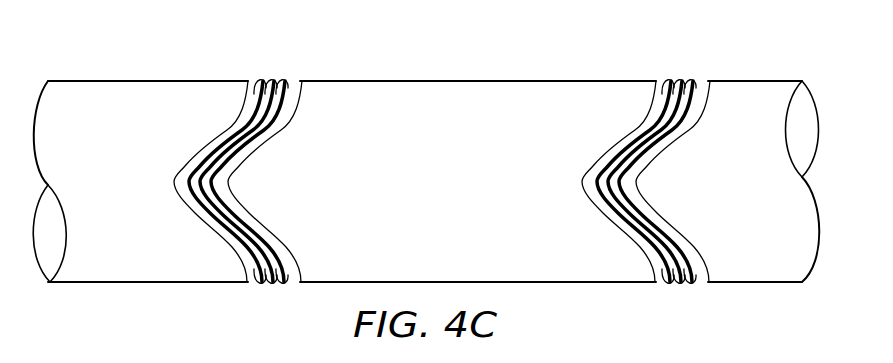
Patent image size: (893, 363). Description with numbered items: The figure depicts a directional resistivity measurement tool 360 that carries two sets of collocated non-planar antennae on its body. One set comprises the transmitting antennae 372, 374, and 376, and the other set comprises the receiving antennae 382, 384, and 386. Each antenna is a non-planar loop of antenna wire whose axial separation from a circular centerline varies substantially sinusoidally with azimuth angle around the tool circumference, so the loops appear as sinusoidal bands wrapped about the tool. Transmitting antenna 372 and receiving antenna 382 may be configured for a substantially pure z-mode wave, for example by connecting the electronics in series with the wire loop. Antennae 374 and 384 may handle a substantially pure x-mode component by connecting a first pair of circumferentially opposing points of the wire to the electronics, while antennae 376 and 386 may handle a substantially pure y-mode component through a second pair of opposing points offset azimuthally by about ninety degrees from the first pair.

The measurement tool 360 is at (379, 77).
The transmitting antenna 372 is at (228, 130).
The transmitting antenna 374 is at (197, 192).
The transmitting antenna 376 is at (242, 215).
The receiving antenna 382 is at (638, 128).
The receiving antenna 384 is at (605, 190).
The receiving antenna 386 is at (648, 213).